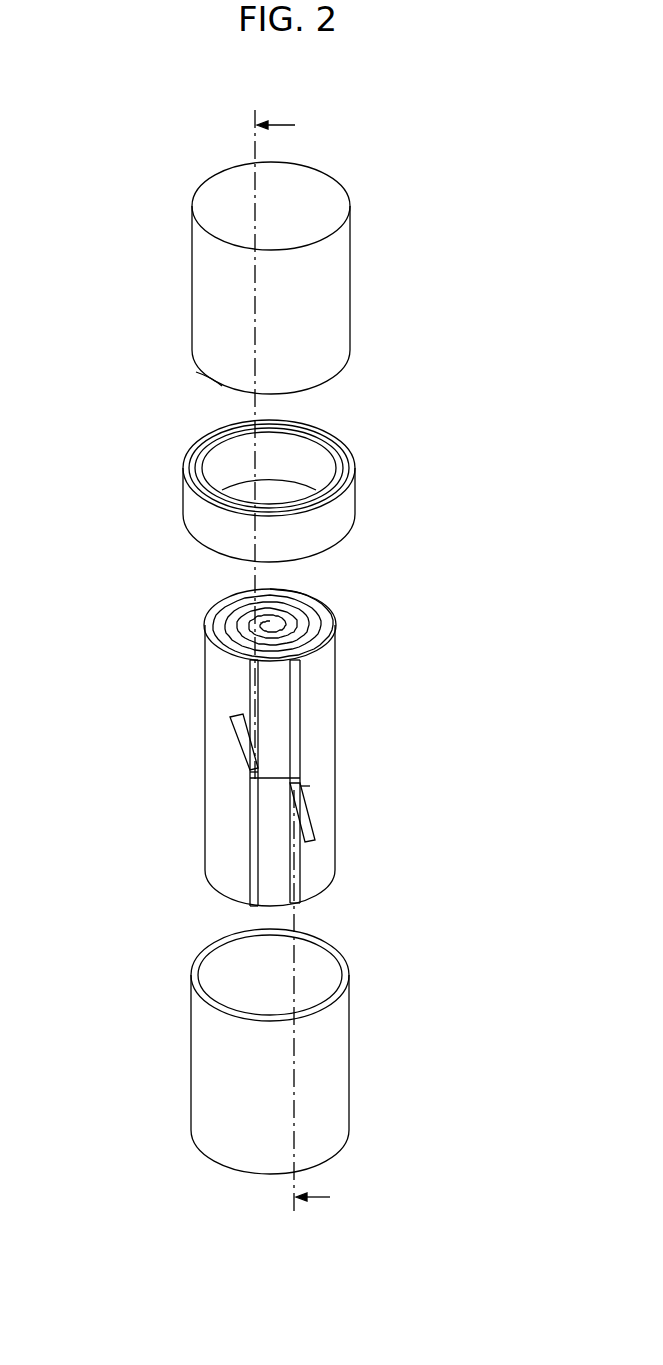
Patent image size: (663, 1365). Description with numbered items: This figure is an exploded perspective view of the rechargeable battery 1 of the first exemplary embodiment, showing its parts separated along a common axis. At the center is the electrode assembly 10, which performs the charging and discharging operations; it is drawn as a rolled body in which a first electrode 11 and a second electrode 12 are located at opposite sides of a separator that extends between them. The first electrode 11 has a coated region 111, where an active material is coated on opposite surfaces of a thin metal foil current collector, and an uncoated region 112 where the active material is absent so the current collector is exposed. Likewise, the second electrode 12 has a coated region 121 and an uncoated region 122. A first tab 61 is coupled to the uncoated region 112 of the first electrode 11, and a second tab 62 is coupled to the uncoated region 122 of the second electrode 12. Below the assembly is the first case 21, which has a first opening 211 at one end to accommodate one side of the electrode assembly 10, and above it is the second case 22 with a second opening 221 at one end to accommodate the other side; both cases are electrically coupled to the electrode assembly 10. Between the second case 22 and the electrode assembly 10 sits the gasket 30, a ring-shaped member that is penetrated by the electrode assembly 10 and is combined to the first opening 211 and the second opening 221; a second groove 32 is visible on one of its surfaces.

The rechargeable battery 1 is at (124, 151).
The electrode assembly 10 is at (158, 632).
The first electrode 11 is at (425, 665).
The coated region 111 is at (282, 680).
The uncoated region 112 is at (297, 752).
The second electrode 12 is at (125, 752).
The coated region 121 is at (215, 772).
The uncoated region 122 is at (255, 840).
The first tab 61 is at (315, 838).
The second tab 62 is at (231, 718).
The first case 21 is at (350, 1063).
The first opening 211 is at (343, 960).
The second case 22 is at (350, 296).
The second opening 221 is at (198, 368).
The gasket 30 is at (357, 500).
The second groove 32 is at (347, 457).